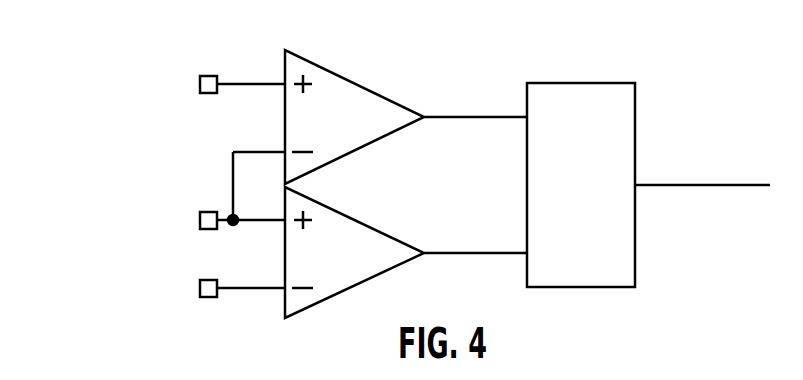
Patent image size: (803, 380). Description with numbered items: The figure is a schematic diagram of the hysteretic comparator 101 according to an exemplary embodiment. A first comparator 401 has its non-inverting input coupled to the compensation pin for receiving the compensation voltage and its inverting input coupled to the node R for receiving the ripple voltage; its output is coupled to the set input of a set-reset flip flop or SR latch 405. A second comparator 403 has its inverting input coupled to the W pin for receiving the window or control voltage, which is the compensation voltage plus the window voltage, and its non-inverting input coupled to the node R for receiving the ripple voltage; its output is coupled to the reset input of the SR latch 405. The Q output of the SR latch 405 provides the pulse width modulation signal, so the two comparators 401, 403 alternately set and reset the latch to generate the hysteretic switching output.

The hysteretic comparator 101 is at (460, 70).
The first comparator 401 is at (352, 127).
The second comparator 403 is at (355, 259).
The SR latch 405 is at (578, 193).